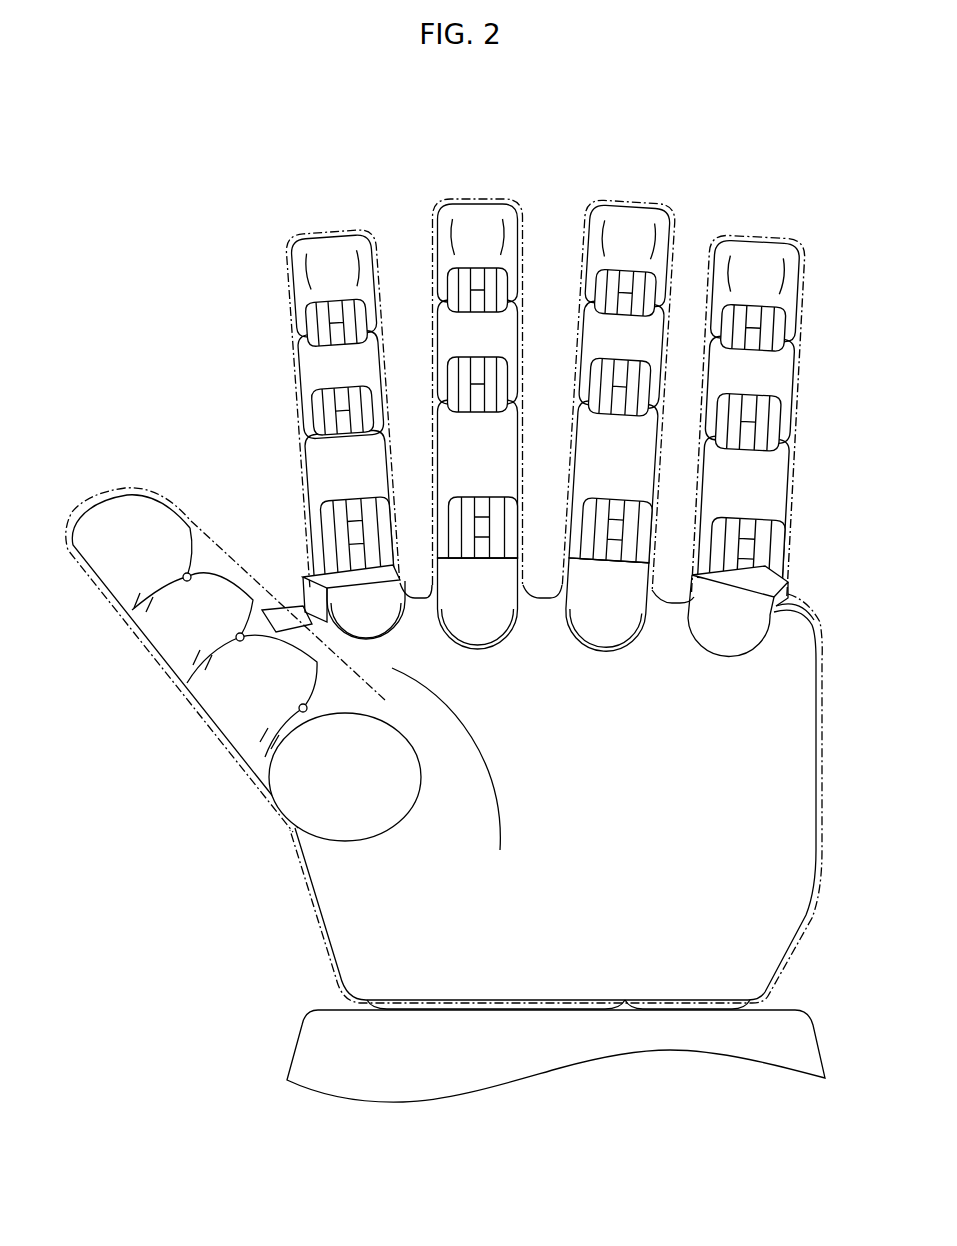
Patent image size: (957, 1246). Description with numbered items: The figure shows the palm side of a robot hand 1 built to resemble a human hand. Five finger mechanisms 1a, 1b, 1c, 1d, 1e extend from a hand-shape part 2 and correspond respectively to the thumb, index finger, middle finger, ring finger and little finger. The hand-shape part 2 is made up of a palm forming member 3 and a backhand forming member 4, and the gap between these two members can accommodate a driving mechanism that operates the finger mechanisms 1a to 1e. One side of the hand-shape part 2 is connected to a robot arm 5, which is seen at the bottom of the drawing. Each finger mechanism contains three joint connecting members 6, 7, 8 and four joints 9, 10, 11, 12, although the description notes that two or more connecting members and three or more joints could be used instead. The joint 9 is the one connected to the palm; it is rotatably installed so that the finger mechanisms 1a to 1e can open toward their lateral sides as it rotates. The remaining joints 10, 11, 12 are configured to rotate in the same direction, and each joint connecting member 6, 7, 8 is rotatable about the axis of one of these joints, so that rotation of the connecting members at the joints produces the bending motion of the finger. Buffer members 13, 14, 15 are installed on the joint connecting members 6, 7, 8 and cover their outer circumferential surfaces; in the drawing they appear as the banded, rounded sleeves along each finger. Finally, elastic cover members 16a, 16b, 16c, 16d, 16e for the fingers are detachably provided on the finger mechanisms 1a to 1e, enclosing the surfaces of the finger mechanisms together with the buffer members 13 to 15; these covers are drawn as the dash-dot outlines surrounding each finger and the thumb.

The robot hand 1 is at (166, 214).
The finger mechanism 1a is at (111, 491).
The finger mechanism 1b is at (299, 231).
The finger mechanism 1c is at (478, 191).
The finger mechanism 1d is at (652, 199).
The finger mechanism 1e is at (766, 231).
The hand-shape part 2 is at (801, 941).
The palm forming member 3 is at (793, 820).
The backhand forming member 4 is at (801, 631).
The robot arm 5 is at (300, 1050).
The joint connecting member 6 is at (335, 506).
The joint connecting member 7 is at (355, 398).
The joint connecting member 8 is at (325, 302).
The joint 9 is at (298, 576).
The joint 10 is at (301, 522).
The joint 11 is at (294, 418).
The joint 12 is at (290, 326).
The buffer member 13 is at (514, 437).
The buffer member 14 is at (514, 345).
The buffer member 15 is at (513, 256).
The elastic cover member 16a is at (172, 672).
The elastic cover member 16b is at (285, 260).
The elastic cover member 16c is at (437, 205).
The elastic cover member 16d is at (593, 207).
The elastic cover member 16e is at (742, 237).